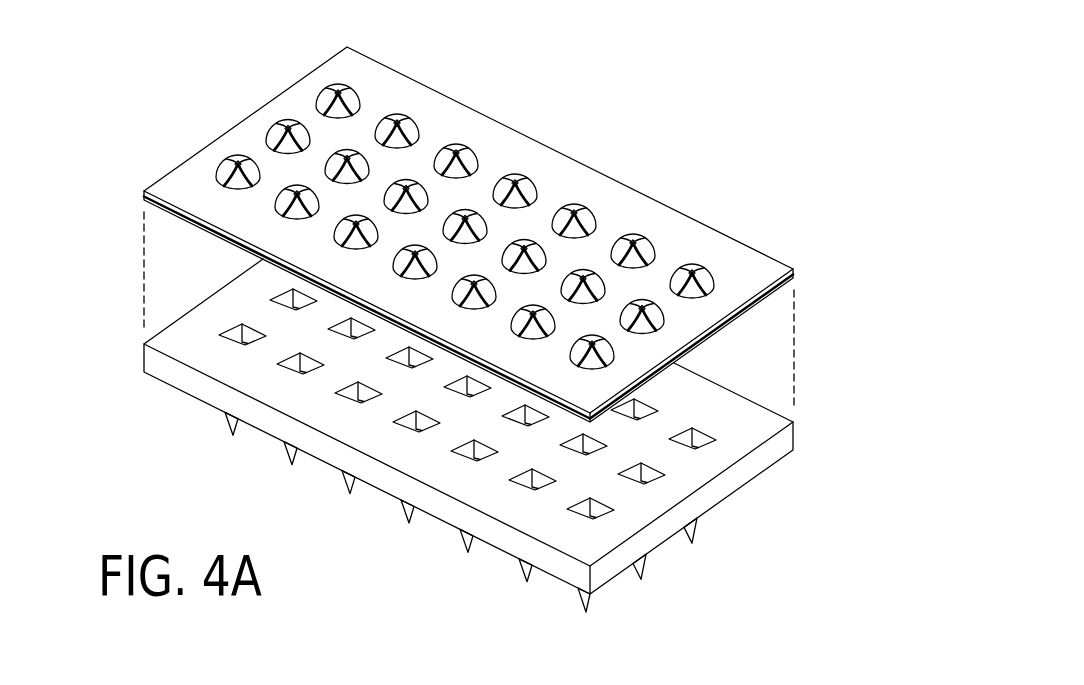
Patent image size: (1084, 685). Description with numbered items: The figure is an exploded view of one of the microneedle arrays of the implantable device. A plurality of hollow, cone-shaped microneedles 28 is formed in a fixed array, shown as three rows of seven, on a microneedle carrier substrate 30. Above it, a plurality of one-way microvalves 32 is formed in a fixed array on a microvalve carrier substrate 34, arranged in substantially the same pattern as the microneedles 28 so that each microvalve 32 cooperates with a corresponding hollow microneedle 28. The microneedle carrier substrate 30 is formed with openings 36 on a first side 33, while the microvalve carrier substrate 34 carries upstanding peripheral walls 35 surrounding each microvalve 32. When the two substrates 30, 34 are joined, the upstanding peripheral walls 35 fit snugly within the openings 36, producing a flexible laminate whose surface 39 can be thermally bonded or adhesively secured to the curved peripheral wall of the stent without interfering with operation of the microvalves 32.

The microneedles 28 is at (233, 435).
The microneedle carrier substrate 30 is at (521, 472).
The one-way microvalves 32 is at (478, 142).
The first side 33 is at (743, 442).
The microvalve carrier substrate 34 is at (740, 240).
The upstanding peripheral walls 35 is at (468, 514).
The openings 36 is at (648, 404).
The surface 39 is at (465, 200).